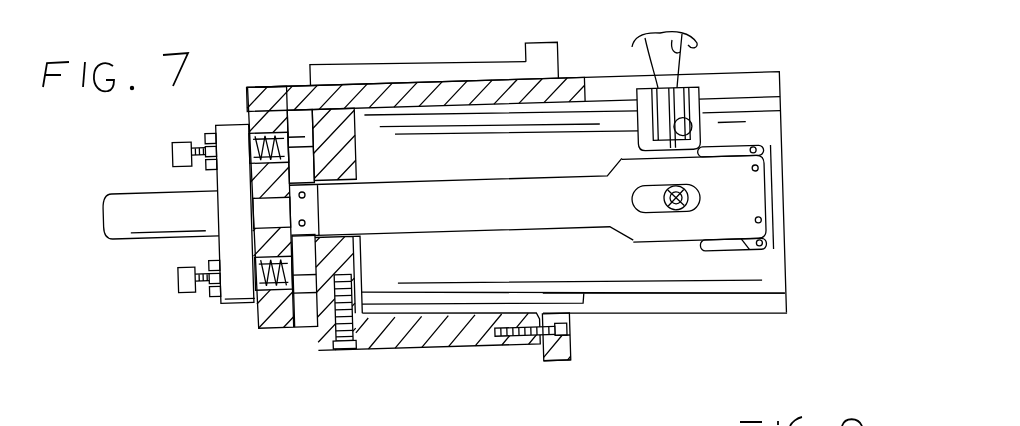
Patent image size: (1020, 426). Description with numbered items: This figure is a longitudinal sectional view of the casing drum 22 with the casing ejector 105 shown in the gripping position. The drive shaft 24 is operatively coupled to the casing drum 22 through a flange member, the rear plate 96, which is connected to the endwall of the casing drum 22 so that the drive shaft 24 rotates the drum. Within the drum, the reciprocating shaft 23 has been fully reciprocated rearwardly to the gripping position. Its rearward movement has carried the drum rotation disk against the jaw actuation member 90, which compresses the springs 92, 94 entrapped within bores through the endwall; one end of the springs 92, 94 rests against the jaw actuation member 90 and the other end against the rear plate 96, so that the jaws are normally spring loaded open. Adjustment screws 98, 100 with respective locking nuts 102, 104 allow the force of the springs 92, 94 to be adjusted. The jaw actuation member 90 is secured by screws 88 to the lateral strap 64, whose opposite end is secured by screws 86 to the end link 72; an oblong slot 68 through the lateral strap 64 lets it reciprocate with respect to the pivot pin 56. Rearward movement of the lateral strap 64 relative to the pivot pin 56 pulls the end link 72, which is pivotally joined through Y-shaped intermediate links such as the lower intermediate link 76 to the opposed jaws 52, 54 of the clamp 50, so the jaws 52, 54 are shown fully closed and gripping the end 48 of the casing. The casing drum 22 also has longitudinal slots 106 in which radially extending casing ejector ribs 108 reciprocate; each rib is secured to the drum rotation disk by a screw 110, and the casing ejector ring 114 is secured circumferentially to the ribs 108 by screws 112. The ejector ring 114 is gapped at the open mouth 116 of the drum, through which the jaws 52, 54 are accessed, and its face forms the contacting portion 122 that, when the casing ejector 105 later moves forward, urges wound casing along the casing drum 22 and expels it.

The casing drum 22 is at (793, 48).
The reciprocating shaft 23 is at (282, 219).
The drive shaft 24 is at (143, 220).
The leading end 48 is at (692, 155).
The clamp 50 is at (603, 142).
The first opposed jaw 52 is at (702, 102).
The second opposed jaw 54 is at (650, 107).
The pivot pin 56 is at (667, 213).
The lateral strap 64 is at (501, 214).
The oblong slot 68 is at (637, 195).
The end link 72 is at (787, 252).
The lower intermediate link 76 is at (340, 156).
The screws 86 is at (762, 218).
The screws 88 is at (306, 195).
The jaw actuation member 90 is at (305, 250).
The spring 92 is at (257, 126).
The spring 94 is at (268, 326).
The rear plate 96 is at (231, 292).
The adjustment screw 98 is at (178, 141).
The adjustment screw 100 is at (188, 292).
The locking nut 102 is at (210, 167).
The locking nut 104 is at (210, 262).
The casing ejector 105 is at (592, 363).
The longitudinal slot 106 is at (603, 308).
The casing ejector rib 108 is at (404, 72).
The screw 110 is at (345, 350).
The screws 112 is at (576, 325).
The casing ejector ring 114 is at (533, 42).
The open mouth 116 is at (758, 68).
The contacting portion 122 is at (573, 346).